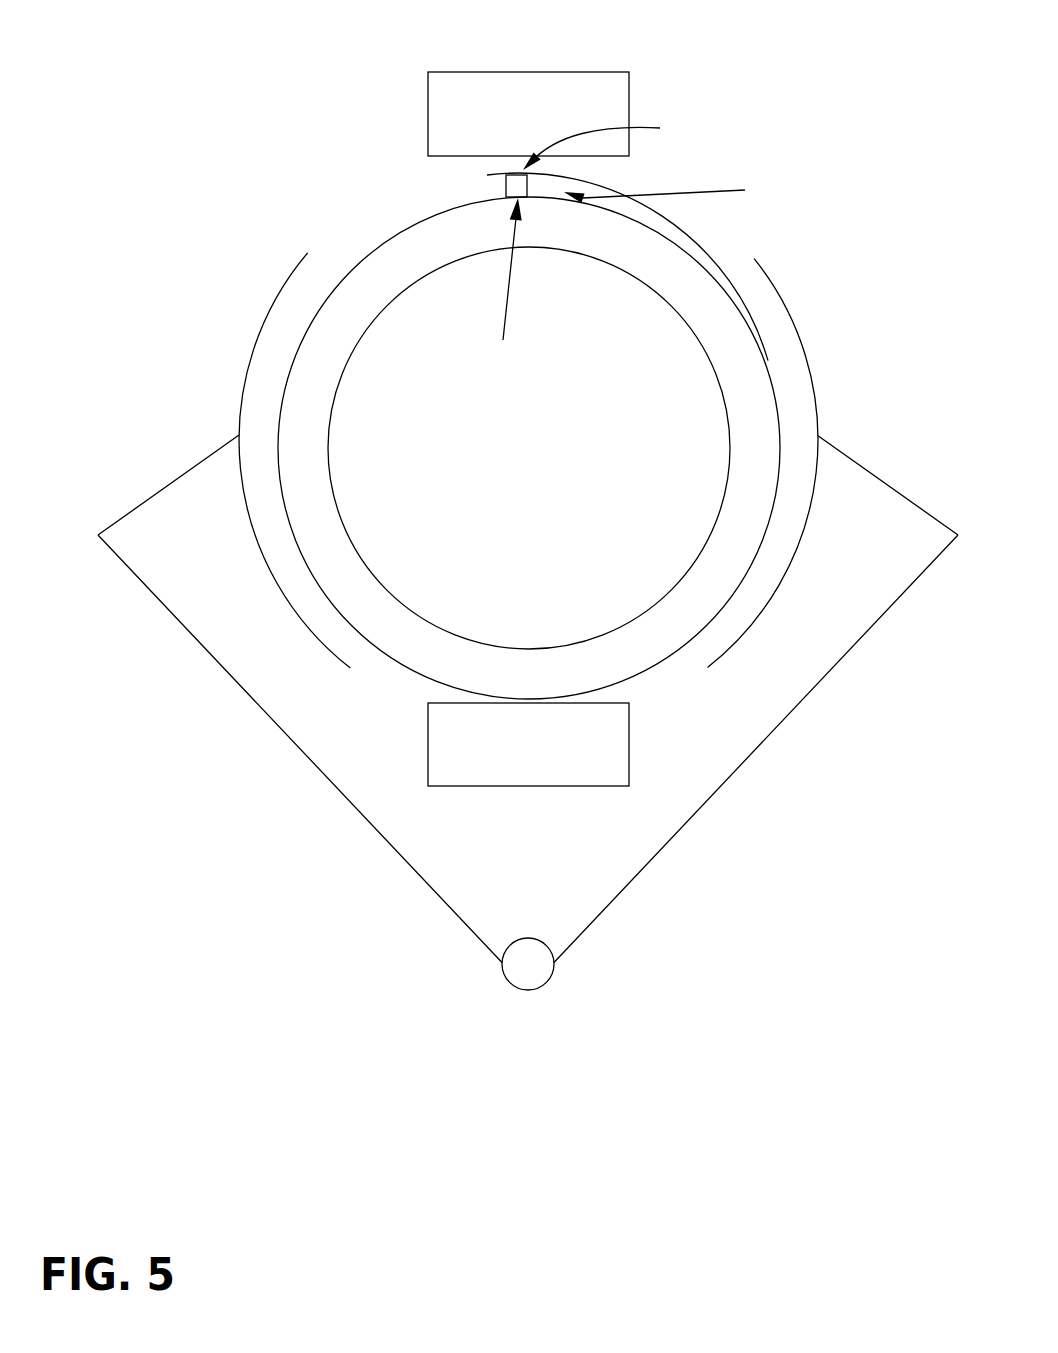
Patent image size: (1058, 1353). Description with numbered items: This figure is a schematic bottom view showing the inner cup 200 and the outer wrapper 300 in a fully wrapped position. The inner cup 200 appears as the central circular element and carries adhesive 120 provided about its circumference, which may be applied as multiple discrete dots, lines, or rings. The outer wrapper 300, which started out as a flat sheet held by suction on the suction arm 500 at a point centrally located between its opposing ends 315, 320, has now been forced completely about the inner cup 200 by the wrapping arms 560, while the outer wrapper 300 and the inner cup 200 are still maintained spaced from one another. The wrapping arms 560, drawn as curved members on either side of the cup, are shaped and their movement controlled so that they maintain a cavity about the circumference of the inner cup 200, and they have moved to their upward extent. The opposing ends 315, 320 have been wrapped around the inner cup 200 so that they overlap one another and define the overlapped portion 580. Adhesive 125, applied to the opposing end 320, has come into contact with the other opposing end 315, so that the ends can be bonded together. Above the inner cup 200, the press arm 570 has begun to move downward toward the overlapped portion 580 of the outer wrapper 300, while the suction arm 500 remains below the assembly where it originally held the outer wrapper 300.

The adhesive 120 is at (717, 273).
The adhesive 125 is at (505, 187).
The inner cup 200 is at (715, 519).
The outer wrapper 300 is at (766, 357).
The opposing end 315 is at (502, 285).
The opposing end 320 is at (612, 143).
The suction arm 500 is at (507, 786).
The wrapping arms 560 is at (265, 322).
The press arm 570 is at (570, 72).
The overlapped portion 580 is at (675, 190).